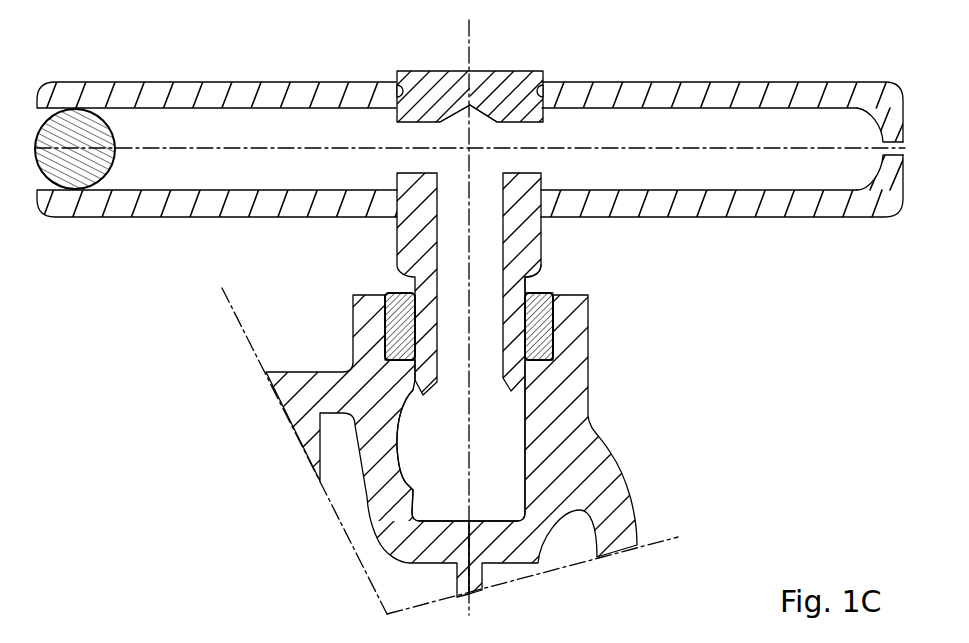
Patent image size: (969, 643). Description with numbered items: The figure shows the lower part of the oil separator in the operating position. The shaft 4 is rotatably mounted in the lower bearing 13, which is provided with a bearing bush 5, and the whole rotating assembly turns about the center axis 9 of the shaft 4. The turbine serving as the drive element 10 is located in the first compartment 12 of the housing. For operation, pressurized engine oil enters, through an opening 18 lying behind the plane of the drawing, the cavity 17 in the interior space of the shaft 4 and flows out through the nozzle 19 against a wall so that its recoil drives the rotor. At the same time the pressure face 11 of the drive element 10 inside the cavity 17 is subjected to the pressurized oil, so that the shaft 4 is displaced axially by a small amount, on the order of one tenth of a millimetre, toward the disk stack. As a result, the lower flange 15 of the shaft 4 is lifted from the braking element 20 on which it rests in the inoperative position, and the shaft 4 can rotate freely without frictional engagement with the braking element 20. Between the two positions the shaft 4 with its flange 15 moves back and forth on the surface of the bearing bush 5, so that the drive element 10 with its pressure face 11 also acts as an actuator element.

The shaft 4 is at (448, 115).
The bearing bush 5 is at (392, 323).
The center axis 9 is at (471, 60).
The turbine (drive element) 10 is at (190, 203).
The pressure face 11 is at (472, 107).
The first compartment 12 is at (330, 298).
The lower bearing 13 is at (567, 363).
The lower flange 15 is at (539, 292).
The cavity 17 is at (472, 288).
The opening 18 is at (470, 471).
The nozzle 19 is at (885, 148).
The braking element 20 is at (540, 290).